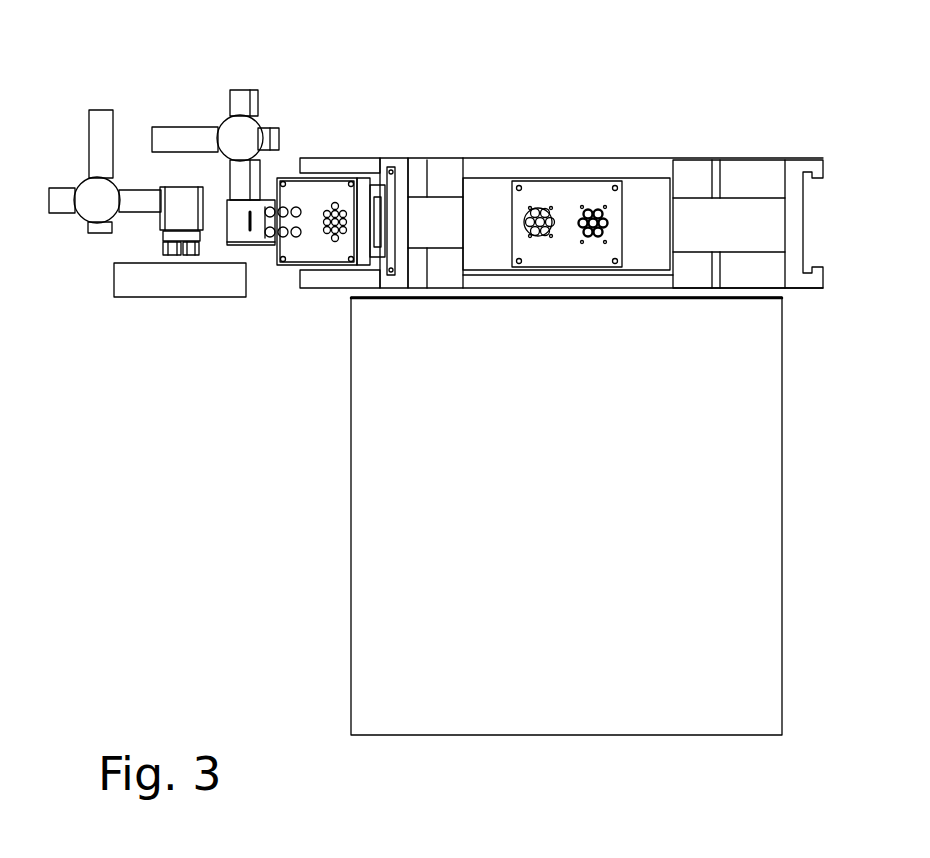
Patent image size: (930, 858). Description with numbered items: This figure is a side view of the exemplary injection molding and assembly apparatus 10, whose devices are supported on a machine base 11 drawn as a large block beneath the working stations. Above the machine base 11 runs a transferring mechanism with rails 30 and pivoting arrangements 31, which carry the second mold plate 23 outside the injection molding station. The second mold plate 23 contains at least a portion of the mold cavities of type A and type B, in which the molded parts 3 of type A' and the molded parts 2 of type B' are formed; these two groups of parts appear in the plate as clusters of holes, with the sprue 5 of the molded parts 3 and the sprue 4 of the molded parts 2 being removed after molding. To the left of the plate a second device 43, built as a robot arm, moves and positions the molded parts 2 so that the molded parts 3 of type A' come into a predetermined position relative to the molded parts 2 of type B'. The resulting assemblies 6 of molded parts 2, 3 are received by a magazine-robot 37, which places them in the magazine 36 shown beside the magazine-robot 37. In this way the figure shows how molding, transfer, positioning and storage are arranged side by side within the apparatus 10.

The molded parts of type B' 2 is at (590, 207).
The molded parts of type A' 3 is at (528, 187).
The sprue of the molded parts 2 4 is at (607, 213).
The sprue of the molded parts 3 5 is at (533, 213).
The assemblies of molded parts 6 is at (178, 253).
The injection molding and assembly apparatus 10 is at (223, 482).
The machine base 11 is at (360, 567).
The second mold plate 23 is at (562, 180).
The rails 30 is at (482, 160).
The pivoting arrangements 31 is at (360, 158).
The magazine 36 is at (140, 295).
The magazine-robot 37 is at (125, 168).
The second device 43 is at (249, 82).